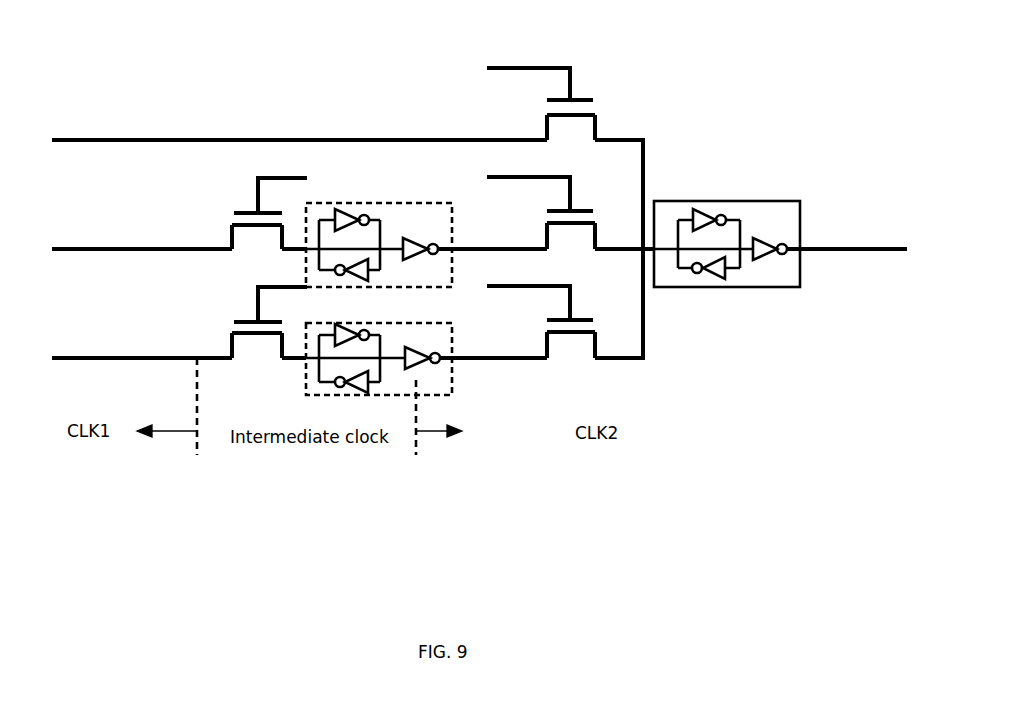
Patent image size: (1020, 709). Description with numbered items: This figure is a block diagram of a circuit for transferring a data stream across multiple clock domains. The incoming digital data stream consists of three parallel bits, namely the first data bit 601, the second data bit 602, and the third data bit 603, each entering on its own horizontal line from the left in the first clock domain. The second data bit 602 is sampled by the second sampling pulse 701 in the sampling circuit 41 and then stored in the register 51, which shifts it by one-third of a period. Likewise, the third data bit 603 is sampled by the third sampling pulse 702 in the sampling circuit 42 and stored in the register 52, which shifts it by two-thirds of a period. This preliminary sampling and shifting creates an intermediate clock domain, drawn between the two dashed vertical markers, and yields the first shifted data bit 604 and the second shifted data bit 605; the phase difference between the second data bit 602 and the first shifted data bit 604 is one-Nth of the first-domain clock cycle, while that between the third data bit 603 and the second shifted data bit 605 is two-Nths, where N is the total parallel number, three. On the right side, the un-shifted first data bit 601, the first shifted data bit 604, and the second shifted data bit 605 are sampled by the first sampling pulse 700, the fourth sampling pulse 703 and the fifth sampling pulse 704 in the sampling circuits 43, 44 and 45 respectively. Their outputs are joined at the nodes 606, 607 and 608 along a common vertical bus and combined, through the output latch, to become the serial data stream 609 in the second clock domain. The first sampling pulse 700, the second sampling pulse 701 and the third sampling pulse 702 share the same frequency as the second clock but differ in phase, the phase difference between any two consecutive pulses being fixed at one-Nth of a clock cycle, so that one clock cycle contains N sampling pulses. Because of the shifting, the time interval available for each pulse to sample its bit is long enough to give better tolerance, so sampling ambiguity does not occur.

The data bit DATA10 601 is at (173, 140).
The data bit DATA11 602 is at (173, 249).
The data bit DATA12 603 is at (173, 358).
The sampling circuit 41 is at (243, 213).
The sampling circuit 42 is at (243, 322).
The sampling circuit 43 is at (571, 100).
The sampling circuit 44 is at (571, 211).
The sampling circuit 45 is at (571, 320).
The register 51 is at (343, 203).
The register 52 is at (389, 395).
The data bit DATA13 604 is at (463, 249).
The data bit DATA14 605 is at (463, 358).
The node connecting DATA10 to output bus 606 is at (618, 140).
The node connecting DATA13 to output bus 607 is at (608, 249).
The node connecting DATA14 to output bus 608 is at (608, 358).
The serial data stream DATA15 609 is at (812, 249).
The sampling pulse SEL_0 700 is at (497, 68).
The sampling pulse SEL_1 701 is at (295, 178).
The sampling pulse SEL_2 702 is at (267, 287).
The sampling pulse SEL_3 703 is at (488, 177).
The sampling pulse SEL_4 704 is at (562, 286).